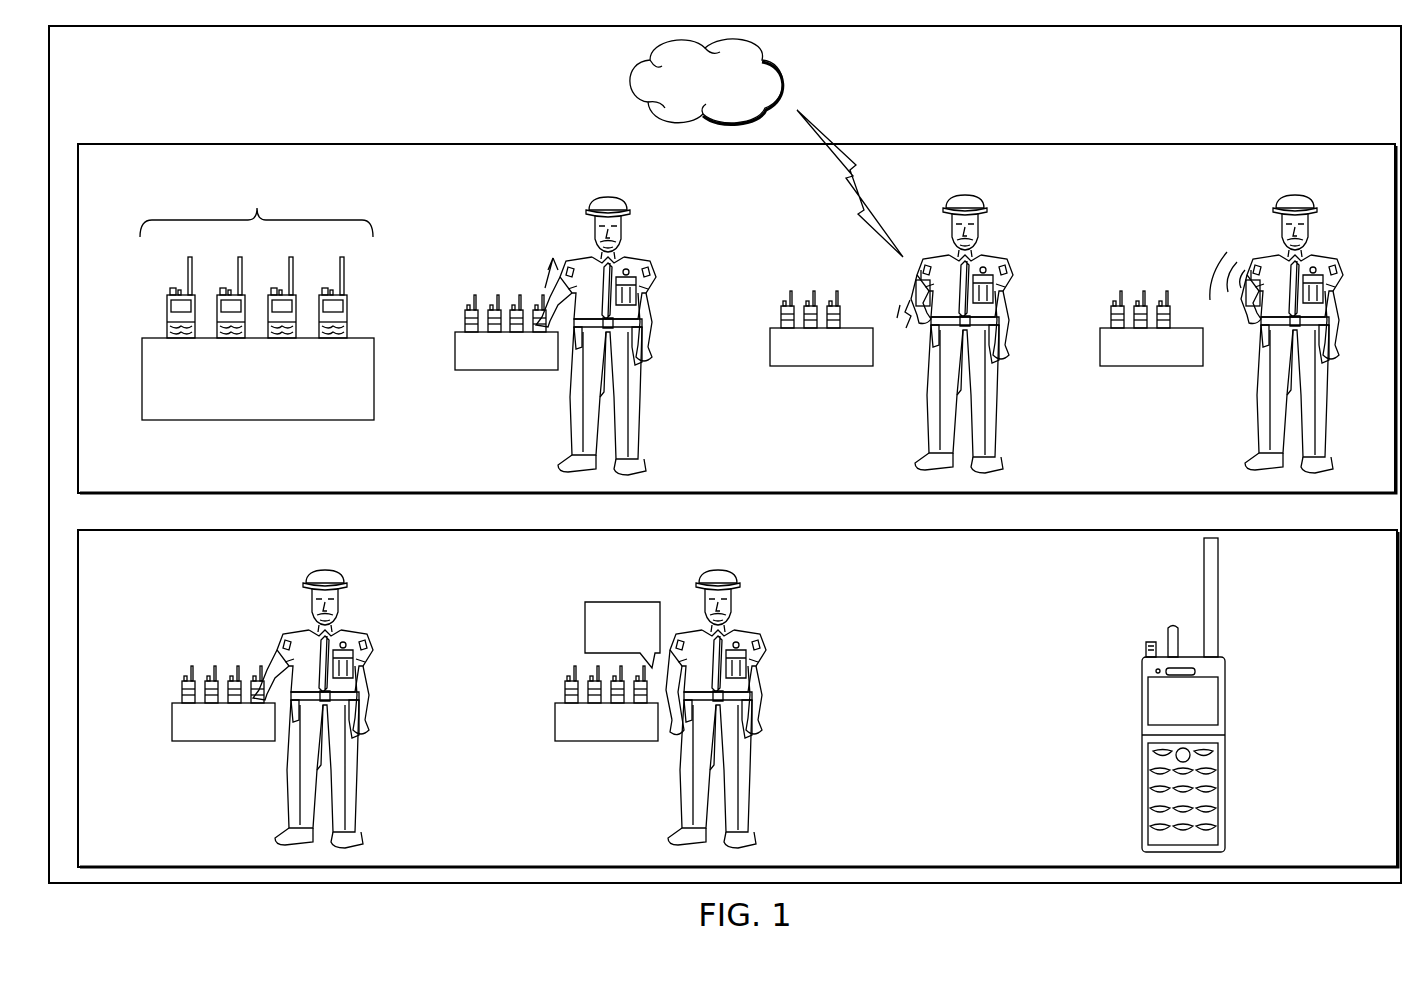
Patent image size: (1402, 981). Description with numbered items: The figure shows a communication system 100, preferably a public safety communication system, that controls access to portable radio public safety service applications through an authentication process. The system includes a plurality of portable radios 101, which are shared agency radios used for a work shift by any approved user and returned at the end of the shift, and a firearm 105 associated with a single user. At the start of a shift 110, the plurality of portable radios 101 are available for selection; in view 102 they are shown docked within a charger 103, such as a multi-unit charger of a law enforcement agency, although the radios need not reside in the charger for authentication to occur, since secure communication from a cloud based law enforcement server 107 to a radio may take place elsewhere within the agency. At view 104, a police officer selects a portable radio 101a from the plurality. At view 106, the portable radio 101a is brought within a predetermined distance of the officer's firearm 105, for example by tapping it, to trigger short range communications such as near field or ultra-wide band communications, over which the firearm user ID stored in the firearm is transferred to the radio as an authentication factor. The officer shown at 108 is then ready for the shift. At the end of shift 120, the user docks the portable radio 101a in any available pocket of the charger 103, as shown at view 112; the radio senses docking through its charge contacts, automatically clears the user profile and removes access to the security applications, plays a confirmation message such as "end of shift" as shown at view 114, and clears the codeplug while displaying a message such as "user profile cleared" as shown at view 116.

The communication system 100 is at (105, 57).
The plurality of portable radios 101 is at (256, 260).
The portable radio 101a is at (348, 322).
The view 102 is at (302, 485).
The charger 103 is at (256, 420).
The view 104 is at (652, 433).
The firearm 105 is at (925, 335).
The view 106 is at (1007, 430).
The cloud based law enforcement server 107 is at (627, 82).
The officer ready for shift 108 is at (1238, 430).
The start of a shift 110 is at (138, 473).
The view 112 is at (370, 807).
The view 114 is at (763, 807).
The view 116 is at (1247, 805).
The end of shift 120 is at (138, 847).